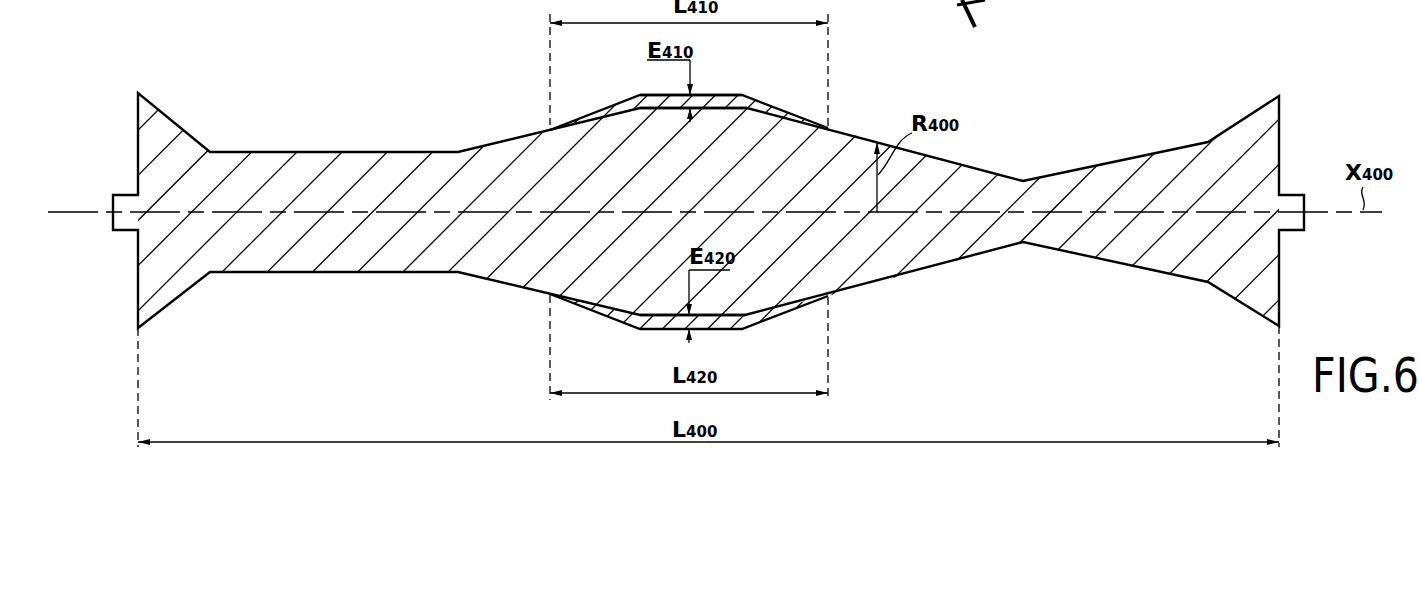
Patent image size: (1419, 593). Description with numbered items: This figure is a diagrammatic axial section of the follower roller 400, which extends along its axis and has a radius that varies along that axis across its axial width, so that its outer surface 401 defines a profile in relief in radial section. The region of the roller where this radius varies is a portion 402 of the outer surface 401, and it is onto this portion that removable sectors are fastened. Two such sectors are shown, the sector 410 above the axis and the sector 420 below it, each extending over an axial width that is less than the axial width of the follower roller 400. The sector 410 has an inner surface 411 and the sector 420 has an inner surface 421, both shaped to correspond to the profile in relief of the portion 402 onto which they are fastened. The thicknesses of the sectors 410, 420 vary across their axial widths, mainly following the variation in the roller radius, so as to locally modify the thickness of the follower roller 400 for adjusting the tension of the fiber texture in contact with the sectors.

The follower roller 400 is at (709, 205).
The outer surface 401 is at (520, 136).
The portion 402 is at (715, 100).
The sector 410 is at (643, 96).
The inner surface 411 is at (722, 110).
The sector 420 is at (723, 327).
The inner surface 421 is at (716, 313).